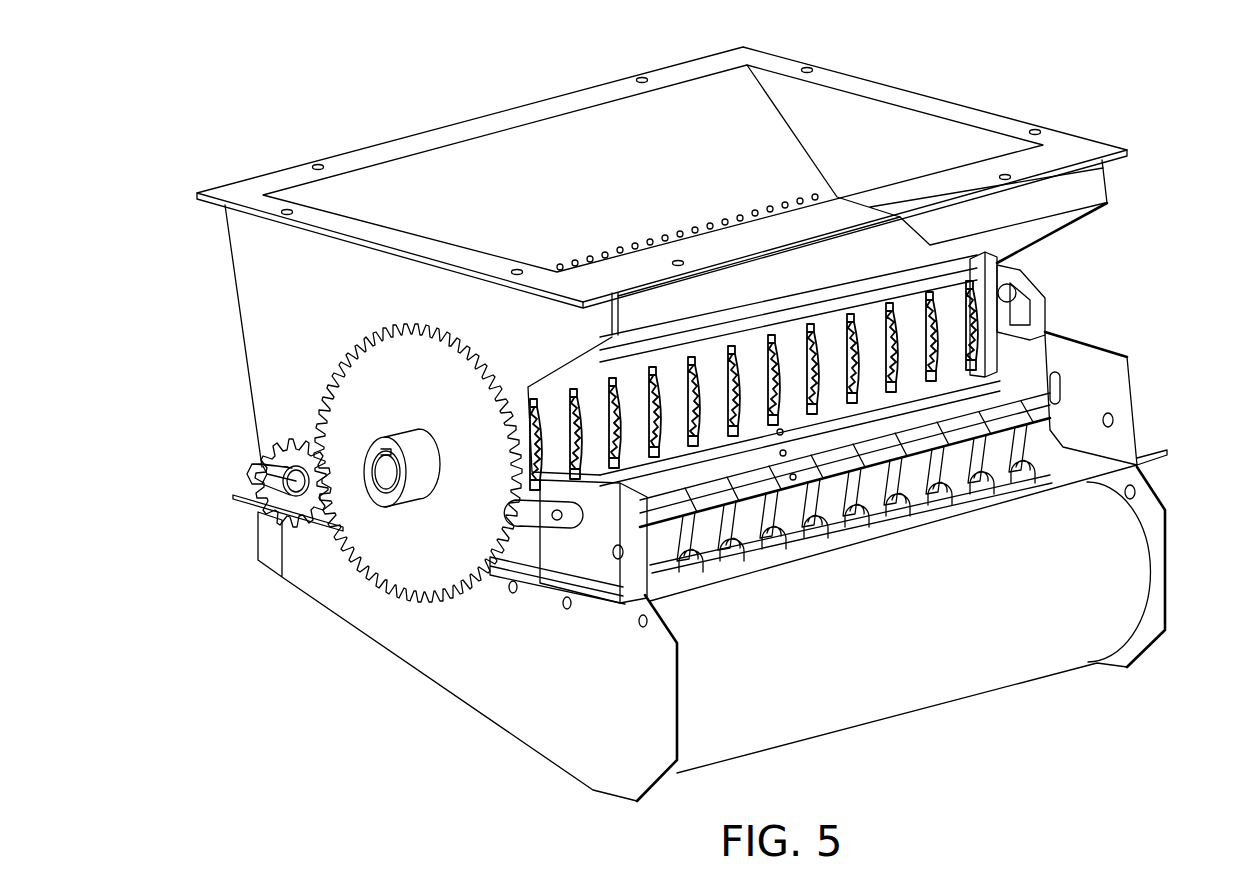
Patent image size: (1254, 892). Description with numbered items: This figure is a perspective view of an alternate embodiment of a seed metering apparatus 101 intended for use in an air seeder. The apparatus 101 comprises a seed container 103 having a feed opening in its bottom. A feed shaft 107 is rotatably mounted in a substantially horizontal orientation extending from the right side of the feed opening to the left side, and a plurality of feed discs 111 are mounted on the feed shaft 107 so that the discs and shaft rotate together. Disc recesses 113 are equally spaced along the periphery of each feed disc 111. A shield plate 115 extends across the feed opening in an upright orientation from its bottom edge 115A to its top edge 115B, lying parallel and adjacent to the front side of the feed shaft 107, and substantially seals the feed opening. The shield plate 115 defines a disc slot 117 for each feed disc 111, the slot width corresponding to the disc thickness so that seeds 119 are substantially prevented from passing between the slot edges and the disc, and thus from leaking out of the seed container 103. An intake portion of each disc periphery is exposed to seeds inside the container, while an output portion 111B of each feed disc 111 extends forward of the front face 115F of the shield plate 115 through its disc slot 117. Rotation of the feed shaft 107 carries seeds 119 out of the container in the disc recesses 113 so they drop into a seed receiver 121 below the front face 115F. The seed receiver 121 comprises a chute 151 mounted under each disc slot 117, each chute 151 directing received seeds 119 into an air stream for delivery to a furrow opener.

The seed metering apparatus 101 is at (1162, 191).
The seed container 103 is at (905, 88).
The feed shaft 107 is at (377, 493).
The feed discs 111 is at (673, 383).
The output portion 111B is at (613, 425).
The disc recesses 113 is at (987, 293).
The shield plate 115 is at (540, 385).
The bottom edge 115A is at (937, 393).
The top edge 115B is at (871, 343).
The front face 115F is at (793, 350).
The disc slot 117 is at (705, 344).
The seeds 119 is at (794, 197).
The seed receiver 121 is at (727, 590).
The chute 151 is at (1012, 430).